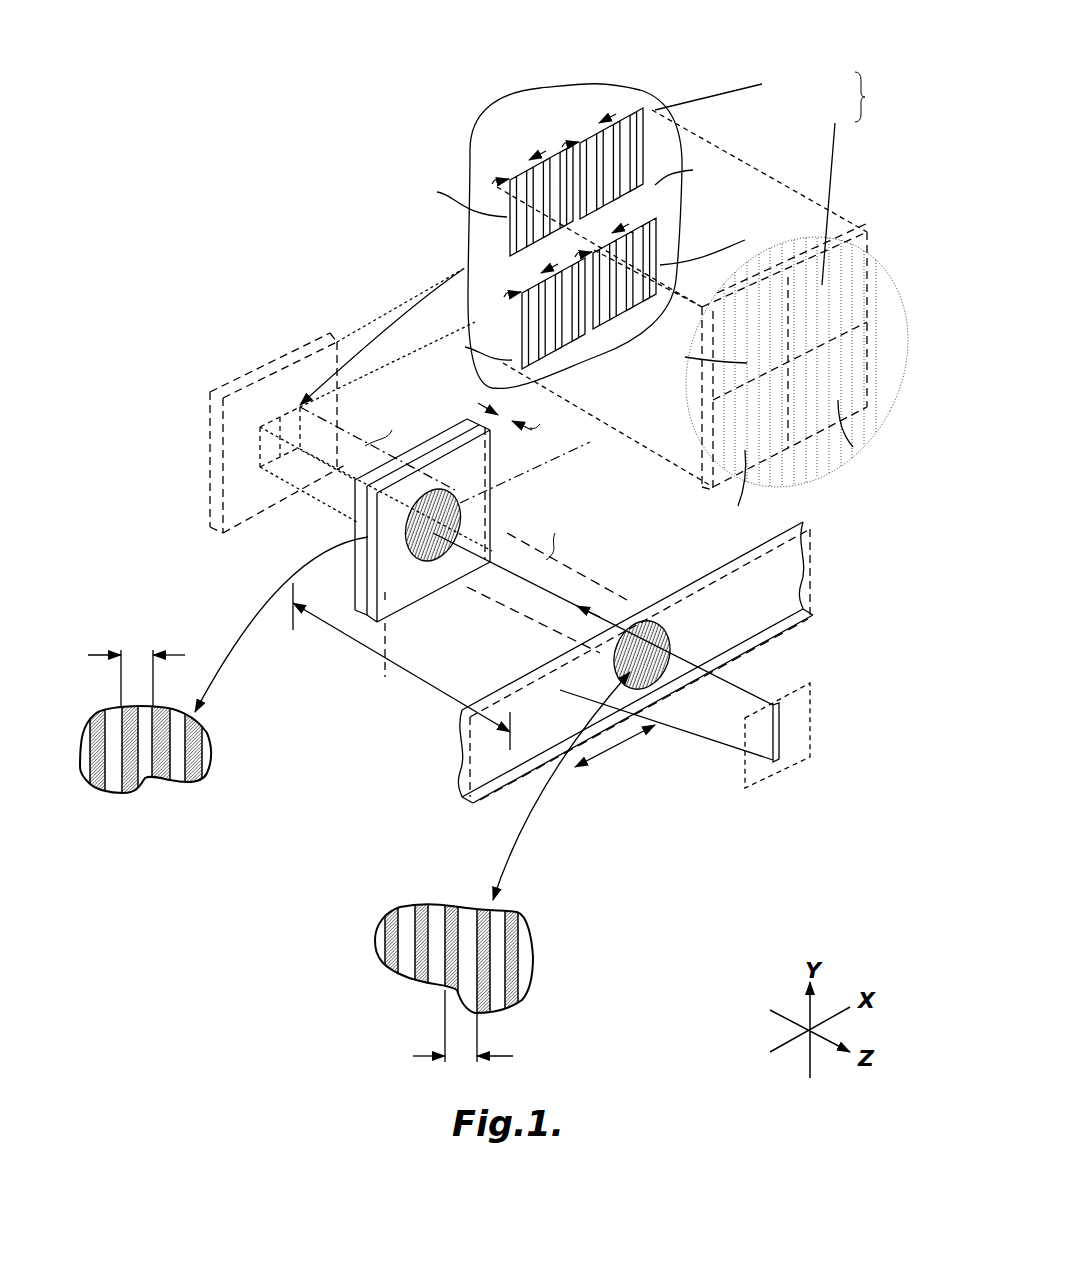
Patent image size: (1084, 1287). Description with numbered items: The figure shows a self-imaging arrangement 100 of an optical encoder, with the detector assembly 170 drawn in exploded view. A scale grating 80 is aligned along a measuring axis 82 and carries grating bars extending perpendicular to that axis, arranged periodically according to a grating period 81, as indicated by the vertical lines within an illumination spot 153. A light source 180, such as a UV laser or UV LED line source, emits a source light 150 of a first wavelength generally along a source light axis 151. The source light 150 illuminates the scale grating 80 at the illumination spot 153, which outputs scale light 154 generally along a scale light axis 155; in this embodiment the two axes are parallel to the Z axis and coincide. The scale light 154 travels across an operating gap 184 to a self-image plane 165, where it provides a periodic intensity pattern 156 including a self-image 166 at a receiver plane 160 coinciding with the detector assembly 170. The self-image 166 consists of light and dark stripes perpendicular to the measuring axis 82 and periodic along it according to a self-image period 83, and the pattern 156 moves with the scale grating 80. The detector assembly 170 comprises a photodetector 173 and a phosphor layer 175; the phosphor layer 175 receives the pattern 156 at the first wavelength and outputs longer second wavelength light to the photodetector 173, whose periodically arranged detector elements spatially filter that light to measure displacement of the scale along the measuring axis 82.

The self-imaging arrangement 100 is at (234, 180).
The photodetector 173 is at (622, 87).
The phosphor layer 175 is at (852, 233).
The detector assembly 170 is at (192, 538).
The self-image 166 is at (483, 515).
The periodic intensity pattern 156 is at (498, 490).
The source light axis 151 is at (500, 600).
The scale light axis 155 is at (560, 600).
The scale light 154 is at (552, 628).
The source light 150 is at (664, 668).
The illumination spot 153 is at (645, 670).
The light source 180 is at (812, 684).
The measuring axis 82 is at (617, 745).
The scale grating 80 is at (458, 745).
The operating gap 184 is at (425, 683).
The self-image plane 165 is at (386, 592).
The receiver plane 160 is at (385, 678).
The self-image period 83 is at (165, 656).
The grating period 81 is at (457, 1062).